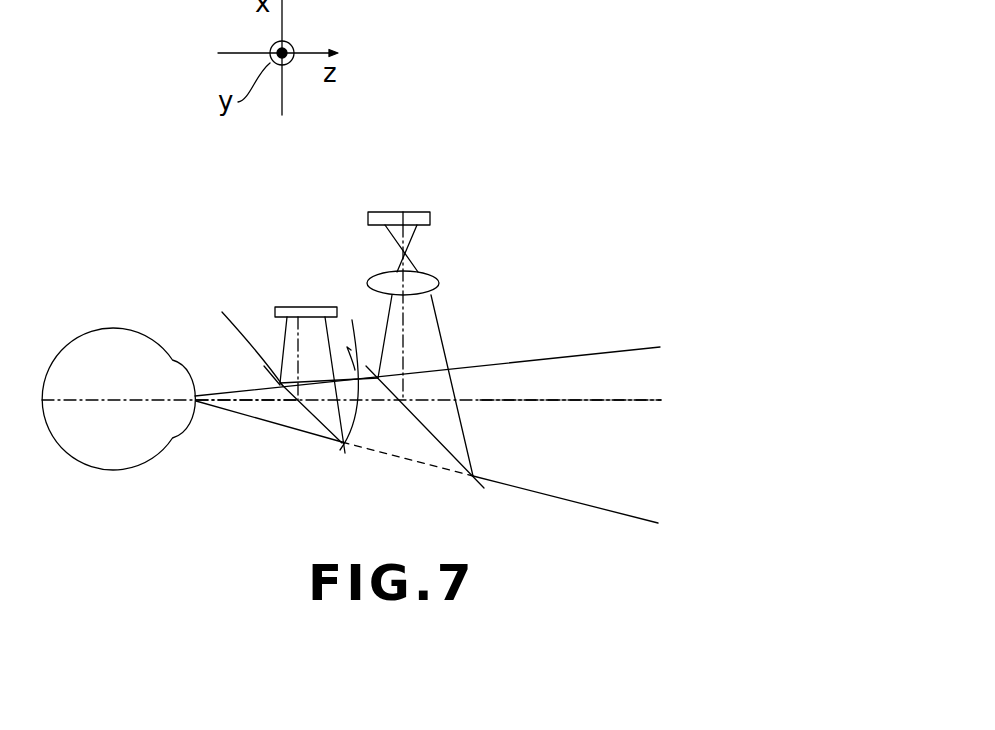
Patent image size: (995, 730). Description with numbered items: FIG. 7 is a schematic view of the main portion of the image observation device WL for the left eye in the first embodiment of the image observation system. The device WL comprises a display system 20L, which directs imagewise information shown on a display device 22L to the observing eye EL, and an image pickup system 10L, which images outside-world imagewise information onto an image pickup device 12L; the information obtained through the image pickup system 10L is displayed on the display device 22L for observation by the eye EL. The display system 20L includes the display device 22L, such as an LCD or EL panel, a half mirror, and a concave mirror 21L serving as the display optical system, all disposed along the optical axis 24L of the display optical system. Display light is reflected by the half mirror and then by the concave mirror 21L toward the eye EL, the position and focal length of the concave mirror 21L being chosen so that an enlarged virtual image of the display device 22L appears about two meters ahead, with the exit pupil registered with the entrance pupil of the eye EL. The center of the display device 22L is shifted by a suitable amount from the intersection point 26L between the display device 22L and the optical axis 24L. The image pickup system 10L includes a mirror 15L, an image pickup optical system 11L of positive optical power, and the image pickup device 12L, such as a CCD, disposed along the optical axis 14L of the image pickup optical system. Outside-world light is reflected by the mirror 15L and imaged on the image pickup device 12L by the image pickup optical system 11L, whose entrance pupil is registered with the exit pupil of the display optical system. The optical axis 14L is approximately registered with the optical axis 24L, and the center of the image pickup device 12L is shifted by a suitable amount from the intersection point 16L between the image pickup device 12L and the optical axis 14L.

The image observation device for the left eye WL is at (506, 110).
The display system 20L is at (151, 171).
The image pickup system 10L is at (634, 219).
The observing eye EL is at (113, 353).
The intersection point 26L is at (300, 310).
The display device 22L is at (323, 313).
The concave mirror 21L is at (352, 320).
The image pickup device 12L is at (382, 211).
The intersection point 16L is at (417, 212).
The image pickup optical system 11L is at (427, 285).
The mirror 15L is at (432, 425).
The optical axis of the image pickup optical system 14L is at (567, 401).
The optical axis of the display optical system 24L is at (230, 400).